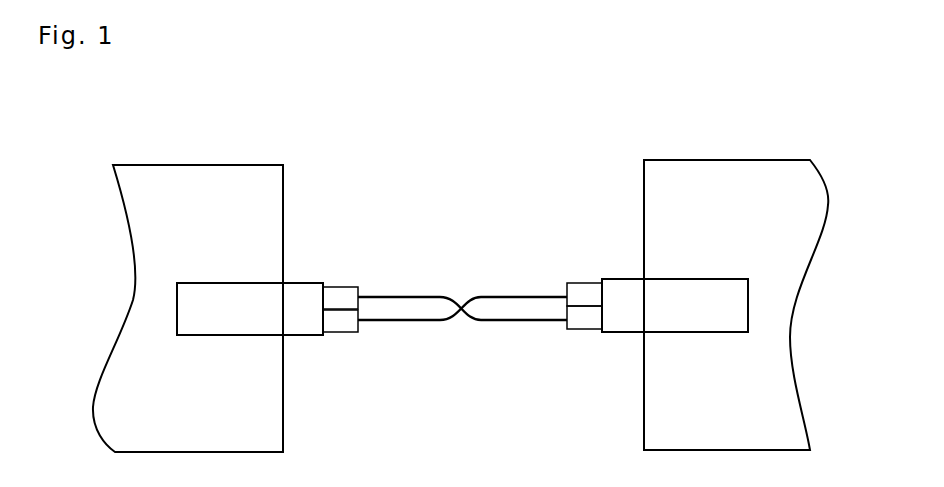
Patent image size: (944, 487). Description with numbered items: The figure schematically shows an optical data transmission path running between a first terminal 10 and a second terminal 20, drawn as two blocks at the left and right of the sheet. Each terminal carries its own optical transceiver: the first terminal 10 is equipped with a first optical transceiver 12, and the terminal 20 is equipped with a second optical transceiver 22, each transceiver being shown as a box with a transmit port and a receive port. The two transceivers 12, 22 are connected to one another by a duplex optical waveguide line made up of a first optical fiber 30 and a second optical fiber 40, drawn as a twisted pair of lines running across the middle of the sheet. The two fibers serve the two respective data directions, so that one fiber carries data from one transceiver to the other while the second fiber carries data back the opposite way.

The first terminal 10 is at (205, 163).
The first optical transceiver 12 is at (288, 283).
The terminal 20 is at (673, 158).
The second optical transceiver 22 is at (625, 278).
The first optical fiber 30 is at (403, 297).
The second optical fiber 40 is at (402, 320).